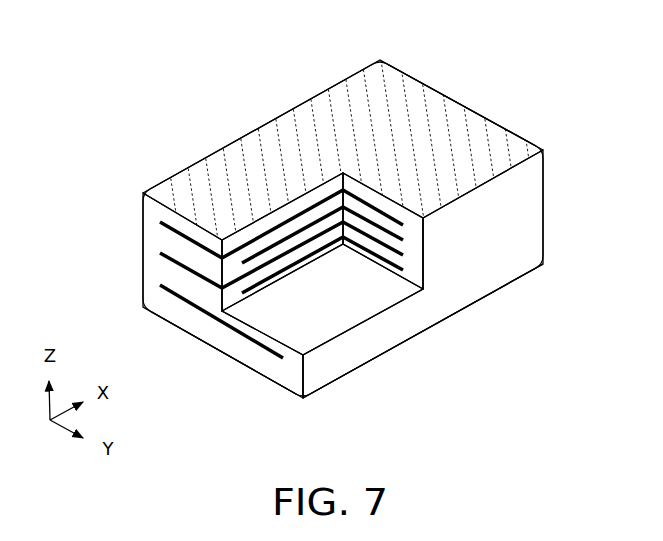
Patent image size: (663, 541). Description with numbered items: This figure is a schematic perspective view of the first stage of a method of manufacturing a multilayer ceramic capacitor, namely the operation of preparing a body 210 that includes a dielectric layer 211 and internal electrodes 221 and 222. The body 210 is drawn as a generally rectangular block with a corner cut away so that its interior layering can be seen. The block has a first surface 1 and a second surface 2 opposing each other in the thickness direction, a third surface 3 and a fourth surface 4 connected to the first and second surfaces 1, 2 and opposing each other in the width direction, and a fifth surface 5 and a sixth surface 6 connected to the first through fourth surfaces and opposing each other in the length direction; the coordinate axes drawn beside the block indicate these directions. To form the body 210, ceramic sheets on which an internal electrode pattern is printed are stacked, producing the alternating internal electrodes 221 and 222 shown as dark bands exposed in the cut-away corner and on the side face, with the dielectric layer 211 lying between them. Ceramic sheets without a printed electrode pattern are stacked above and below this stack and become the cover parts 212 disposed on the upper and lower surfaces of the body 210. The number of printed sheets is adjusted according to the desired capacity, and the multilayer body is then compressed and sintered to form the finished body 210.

The first surface 1 is at (434, 336).
The second surface 2 is at (348, 108).
The third surface 3 is at (242, 376).
The fourth surface 4 is at (491, 107).
The fifth surface 5 is at (485, 251).
The sixth surface 6 is at (133, 226).
The body 210 is at (293, 128).
The dielectric layer 211 is at (372, 230).
The cover part 212 is at (293, 205).
The internal electrode 221 is at (258, 226).
The internal electrode 222 is at (405, 252).